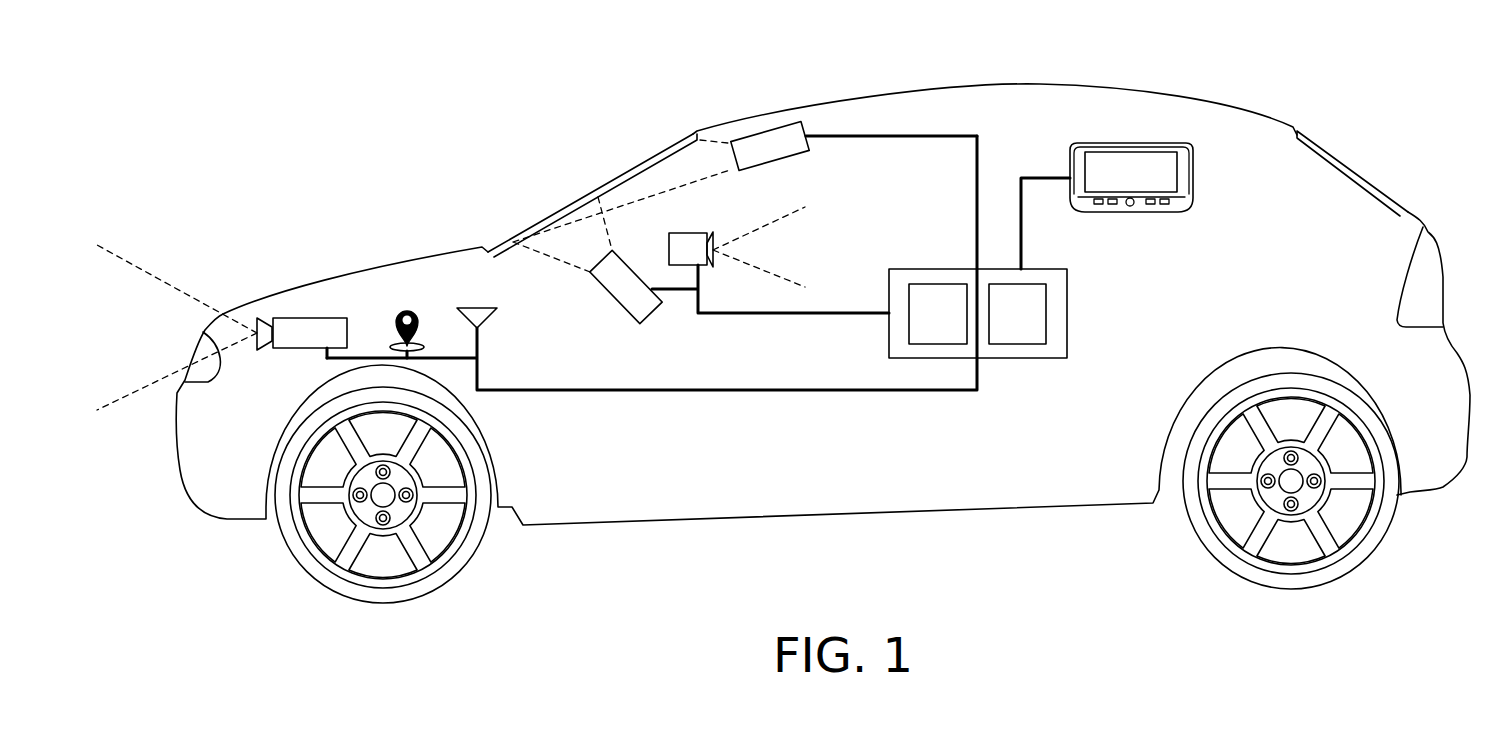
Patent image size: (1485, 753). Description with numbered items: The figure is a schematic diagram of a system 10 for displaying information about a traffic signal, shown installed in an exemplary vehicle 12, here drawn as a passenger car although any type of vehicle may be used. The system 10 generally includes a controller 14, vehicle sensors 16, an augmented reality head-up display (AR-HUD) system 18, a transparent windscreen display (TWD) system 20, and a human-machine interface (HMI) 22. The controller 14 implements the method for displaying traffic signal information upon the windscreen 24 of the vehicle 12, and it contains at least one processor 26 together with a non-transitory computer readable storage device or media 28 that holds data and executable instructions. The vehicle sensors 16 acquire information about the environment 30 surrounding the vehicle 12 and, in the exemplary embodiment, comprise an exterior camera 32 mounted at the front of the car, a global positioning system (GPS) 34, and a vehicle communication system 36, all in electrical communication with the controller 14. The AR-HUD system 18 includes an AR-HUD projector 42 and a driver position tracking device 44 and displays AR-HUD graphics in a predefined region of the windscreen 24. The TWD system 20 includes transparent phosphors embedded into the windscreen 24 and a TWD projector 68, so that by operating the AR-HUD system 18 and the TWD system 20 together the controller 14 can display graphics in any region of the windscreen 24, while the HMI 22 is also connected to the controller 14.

The system for displaying information about a traffic signal 10 is at (547, 188).
The vehicle 12 is at (1200, 98).
The controller 14 is at (1021, 319).
The vehicle sensors 16 is at (271, 366).
The augmented reality head-up display (AR-HUD) system 18 is at (680, 304).
The transparent windscreen display (TWD) system 20 is at (840, 128).
The human-machine interface (HMI) 22 is at (1190, 198).
The windscreen 24 is at (640, 162).
The processor 26 is at (924, 326).
The non-transitory computer readable storage device or media 28 is at (1004, 326).
The environment 30 is at (298, 135).
The exterior camera 32 is at (296, 346).
The global positioning system (GPS) 34 is at (410, 308).
The vehicle communication system 36 is at (463, 307).
The AR-HUD projector 42 is at (614, 299).
The driver position tracking device 44 is at (683, 232).
The TWD projector 68 is at (778, 160).